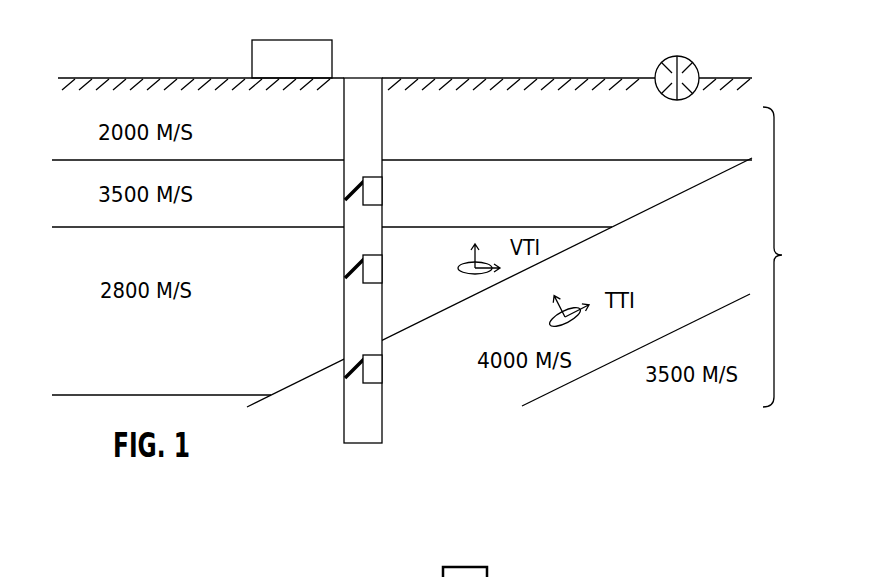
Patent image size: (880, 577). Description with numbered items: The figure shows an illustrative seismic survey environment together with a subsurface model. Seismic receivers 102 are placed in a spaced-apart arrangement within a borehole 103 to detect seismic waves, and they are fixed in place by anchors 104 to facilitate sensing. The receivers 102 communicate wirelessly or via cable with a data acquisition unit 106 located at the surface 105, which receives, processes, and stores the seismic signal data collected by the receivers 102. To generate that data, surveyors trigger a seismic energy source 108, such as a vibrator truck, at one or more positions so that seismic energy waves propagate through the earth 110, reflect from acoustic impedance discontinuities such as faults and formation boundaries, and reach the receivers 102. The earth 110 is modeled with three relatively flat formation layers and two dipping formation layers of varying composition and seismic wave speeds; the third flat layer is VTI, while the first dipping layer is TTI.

The seismic receivers 102 is at (407, 390).
The borehole 103 is at (382, 115).
The anchors 104 is at (343, 372).
The surface 105 is at (72, 78).
The data acquisition unit 106 is at (252, 56).
The seismic energy source 108 is at (684, 58).
The earth 110 is at (792, 257).